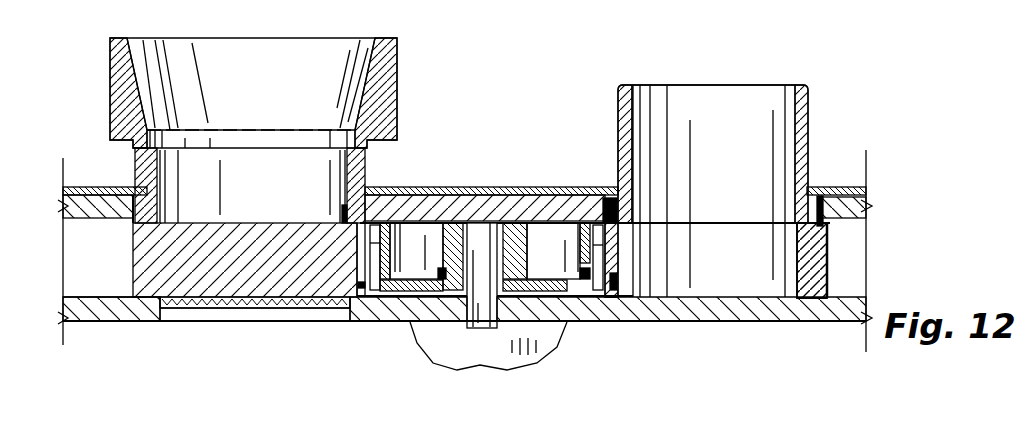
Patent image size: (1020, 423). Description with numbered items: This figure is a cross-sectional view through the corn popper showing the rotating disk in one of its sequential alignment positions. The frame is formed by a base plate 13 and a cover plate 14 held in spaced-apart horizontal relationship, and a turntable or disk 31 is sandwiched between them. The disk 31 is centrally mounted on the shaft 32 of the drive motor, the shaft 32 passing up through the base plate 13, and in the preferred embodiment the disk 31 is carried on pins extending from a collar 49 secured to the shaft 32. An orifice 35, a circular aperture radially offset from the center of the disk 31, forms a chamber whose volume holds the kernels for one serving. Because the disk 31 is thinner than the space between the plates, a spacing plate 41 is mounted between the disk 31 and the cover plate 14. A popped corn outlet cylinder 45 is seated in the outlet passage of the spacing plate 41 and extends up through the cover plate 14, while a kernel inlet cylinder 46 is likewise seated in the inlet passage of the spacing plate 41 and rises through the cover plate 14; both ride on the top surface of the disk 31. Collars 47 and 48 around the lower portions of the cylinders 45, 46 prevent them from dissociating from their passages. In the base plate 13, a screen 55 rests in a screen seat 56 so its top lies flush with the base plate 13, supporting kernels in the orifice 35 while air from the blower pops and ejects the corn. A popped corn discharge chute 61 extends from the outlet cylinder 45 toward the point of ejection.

The base plate 13 is at (718, 315).
The cover plate 14 is at (472, 188).
The disk 31 is at (362, 303).
The shaft 32 is at (476, 302).
The orifice 35 is at (793, 277).
The spacing plate 41 is at (533, 215).
The popped corn outlet cylinder 45 is at (366, 163).
The kernel inlet cylinder 46 is at (806, 128).
The collar 47 is at (826, 197).
The collar 48 is at (350, 213).
The collar 49 is at (570, 300).
The screen 55 is at (330, 308).
The screen seat 56 is at (135, 320).
The popped corn discharge chute 61 is at (387, 63).